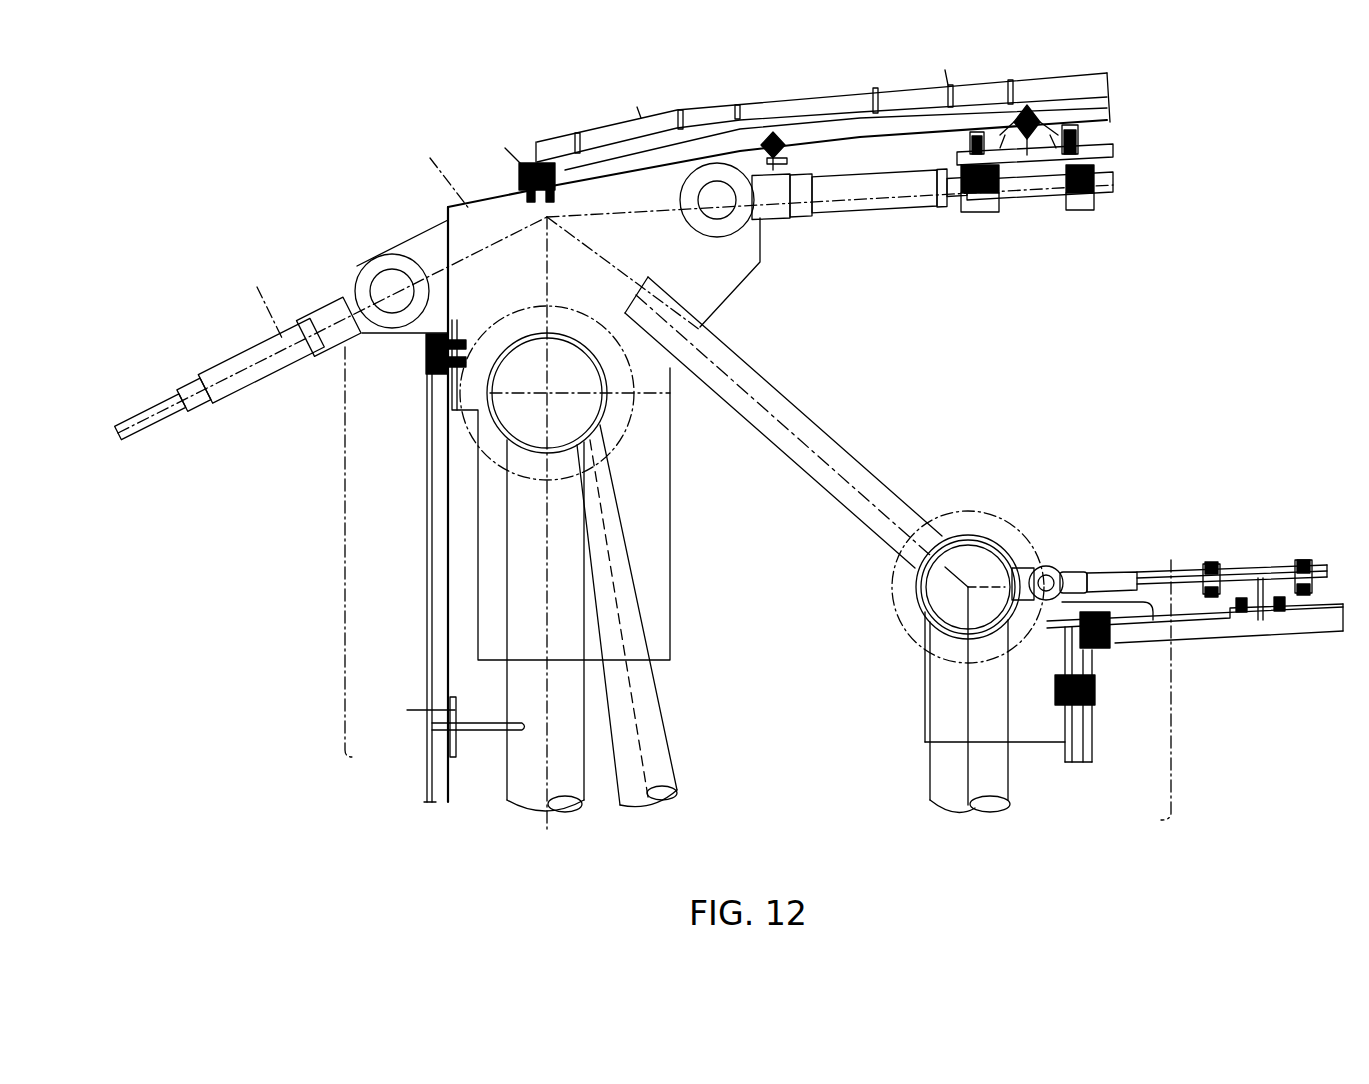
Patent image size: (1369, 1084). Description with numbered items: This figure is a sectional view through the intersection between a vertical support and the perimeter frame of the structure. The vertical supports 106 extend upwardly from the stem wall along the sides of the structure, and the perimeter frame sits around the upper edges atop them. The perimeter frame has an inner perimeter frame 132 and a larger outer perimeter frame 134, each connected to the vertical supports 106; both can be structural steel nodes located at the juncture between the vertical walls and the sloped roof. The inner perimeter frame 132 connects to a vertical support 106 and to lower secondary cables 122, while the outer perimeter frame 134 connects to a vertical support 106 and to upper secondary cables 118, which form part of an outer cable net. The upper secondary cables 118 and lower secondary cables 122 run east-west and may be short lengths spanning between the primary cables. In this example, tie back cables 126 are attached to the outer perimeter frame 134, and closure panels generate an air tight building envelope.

The vertical support 106 is at (522, 789).
The upper secondary cable 118 is at (1037, 187).
The lower secondary cable 122 is at (1158, 576).
The tie back cable 126 is at (130, 420).
The inner perimeter frame 132 is at (987, 567).
The outer perimeter frame 134 is at (552, 402).